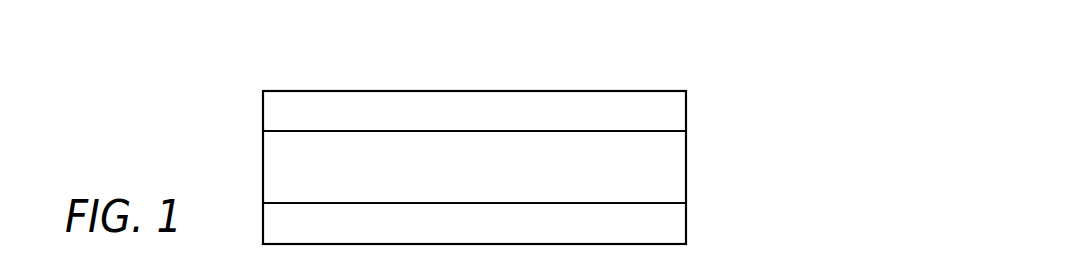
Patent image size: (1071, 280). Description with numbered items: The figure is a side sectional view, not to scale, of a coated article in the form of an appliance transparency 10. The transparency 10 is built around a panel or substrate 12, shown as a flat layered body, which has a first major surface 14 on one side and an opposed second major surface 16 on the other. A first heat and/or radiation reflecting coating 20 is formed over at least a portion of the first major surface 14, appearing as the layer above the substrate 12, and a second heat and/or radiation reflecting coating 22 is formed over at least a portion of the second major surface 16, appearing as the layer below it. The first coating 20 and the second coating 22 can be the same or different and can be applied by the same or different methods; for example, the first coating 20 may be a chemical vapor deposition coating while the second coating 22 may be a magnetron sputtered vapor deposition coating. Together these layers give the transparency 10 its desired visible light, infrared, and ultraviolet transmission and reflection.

The appliance transparency 10 is at (525, 125).
The substrate 12 is at (677, 168).
The first major surface 14 is at (279, 121).
The second major surface 16 is at (280, 214).
The first heat and/or radiation reflecting coating 20 is at (677, 113).
The second heat and/or radiation reflecting coating 22 is at (677, 228).